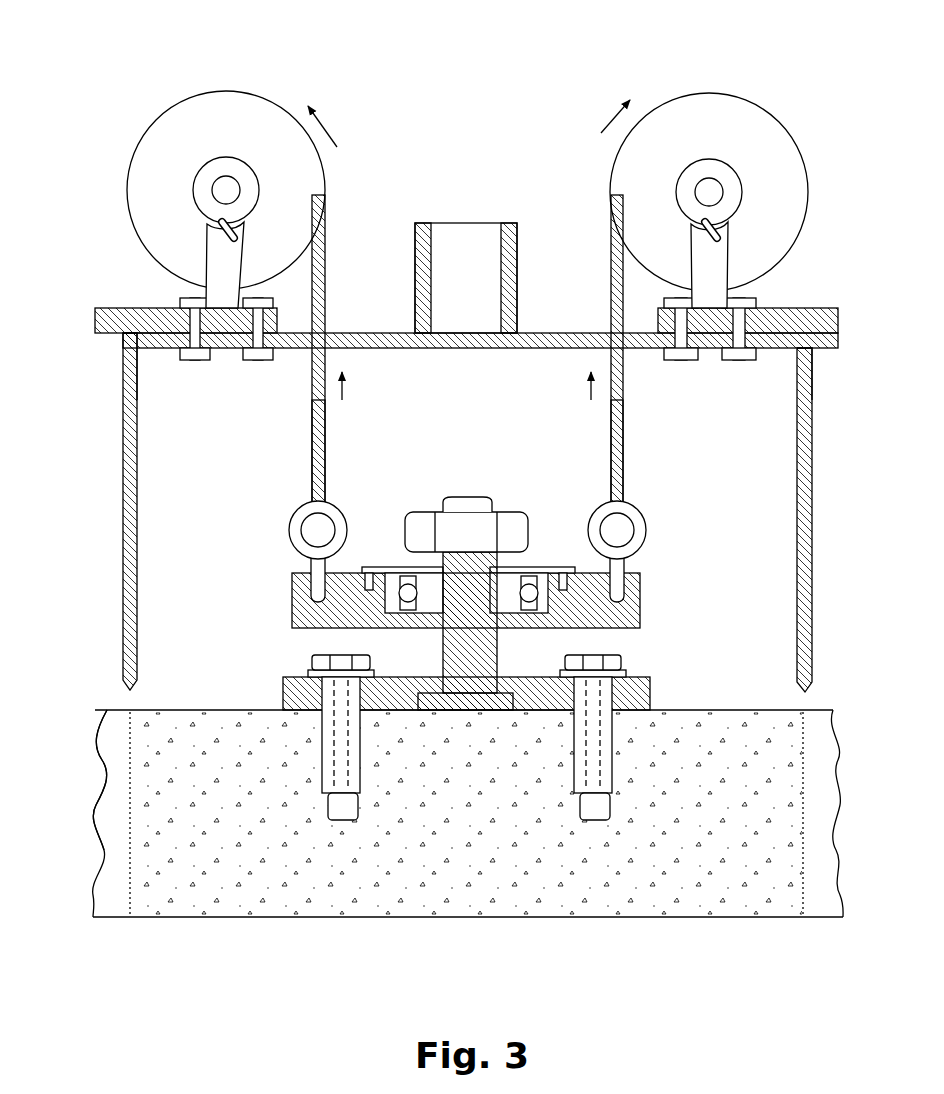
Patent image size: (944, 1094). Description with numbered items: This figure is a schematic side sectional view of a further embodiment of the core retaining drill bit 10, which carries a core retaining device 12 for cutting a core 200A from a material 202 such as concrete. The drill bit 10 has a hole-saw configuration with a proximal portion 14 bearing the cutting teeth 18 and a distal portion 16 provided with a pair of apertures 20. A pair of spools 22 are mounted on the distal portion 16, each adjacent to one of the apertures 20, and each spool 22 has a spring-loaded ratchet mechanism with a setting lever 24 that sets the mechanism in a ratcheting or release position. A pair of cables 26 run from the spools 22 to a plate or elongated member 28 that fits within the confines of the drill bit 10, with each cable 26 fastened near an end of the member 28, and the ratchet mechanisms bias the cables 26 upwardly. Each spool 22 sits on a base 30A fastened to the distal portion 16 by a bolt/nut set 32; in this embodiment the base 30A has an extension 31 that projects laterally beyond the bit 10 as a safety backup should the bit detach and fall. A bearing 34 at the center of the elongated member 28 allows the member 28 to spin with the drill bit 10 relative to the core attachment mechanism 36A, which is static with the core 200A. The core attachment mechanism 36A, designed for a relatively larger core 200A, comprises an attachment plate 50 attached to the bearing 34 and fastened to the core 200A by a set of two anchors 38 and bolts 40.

The core retaining drill bit 10 is at (727, 68).
The core retaining device 12 is at (668, 458).
The proximal portion 14 is at (792, 633).
The distal portion 16 is at (556, 328).
The cutting teeth 18 is at (136, 693).
The apertures 20 is at (330, 330).
The spools 22 is at (253, 94).
The setting lever 24 is at (205, 228).
The cables 26 is at (312, 440).
The elongated member 28 is at (292, 600).
The base 30A is at (161, 307).
The extension 31 is at (122, 334).
The bolt/nut set 32 is at (678, 375).
The bearing 34 is at (508, 501).
The core attachment mechanism 36A is at (278, 728).
The anchors 38 is at (614, 748).
The bolts 40 is at (650, 677).
The attachment plate 50 is at (396, 668).
The core 200A is at (335, 887).
The material 202 is at (94, 832).